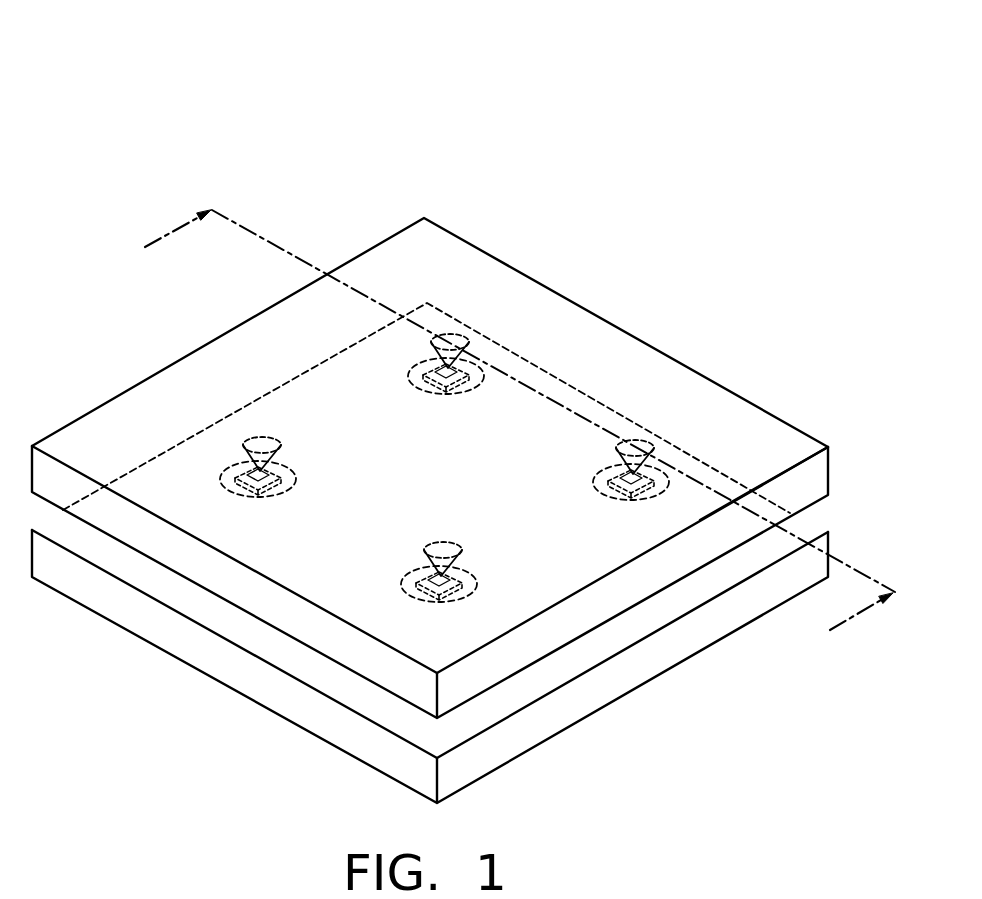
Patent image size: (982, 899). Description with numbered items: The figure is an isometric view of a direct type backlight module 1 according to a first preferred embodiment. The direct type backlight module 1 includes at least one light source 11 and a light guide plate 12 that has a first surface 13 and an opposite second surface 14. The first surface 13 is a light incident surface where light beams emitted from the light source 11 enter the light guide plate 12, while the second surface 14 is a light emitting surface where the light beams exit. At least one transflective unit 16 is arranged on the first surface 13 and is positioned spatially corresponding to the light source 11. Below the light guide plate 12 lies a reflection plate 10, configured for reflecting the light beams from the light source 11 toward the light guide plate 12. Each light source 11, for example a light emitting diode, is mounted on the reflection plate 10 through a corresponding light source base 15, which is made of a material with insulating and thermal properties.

The direct type backlight module 1 is at (350, 42).
The reflection plate 10 is at (677, 642).
The light source 11 is at (253, 473).
The light guide plate 12 is at (678, 413).
The first surface 13 is at (815, 504).
The second surface 14 is at (780, 445).
The light source base 15 is at (617, 475).
The transflective unit 16 is at (455, 337).